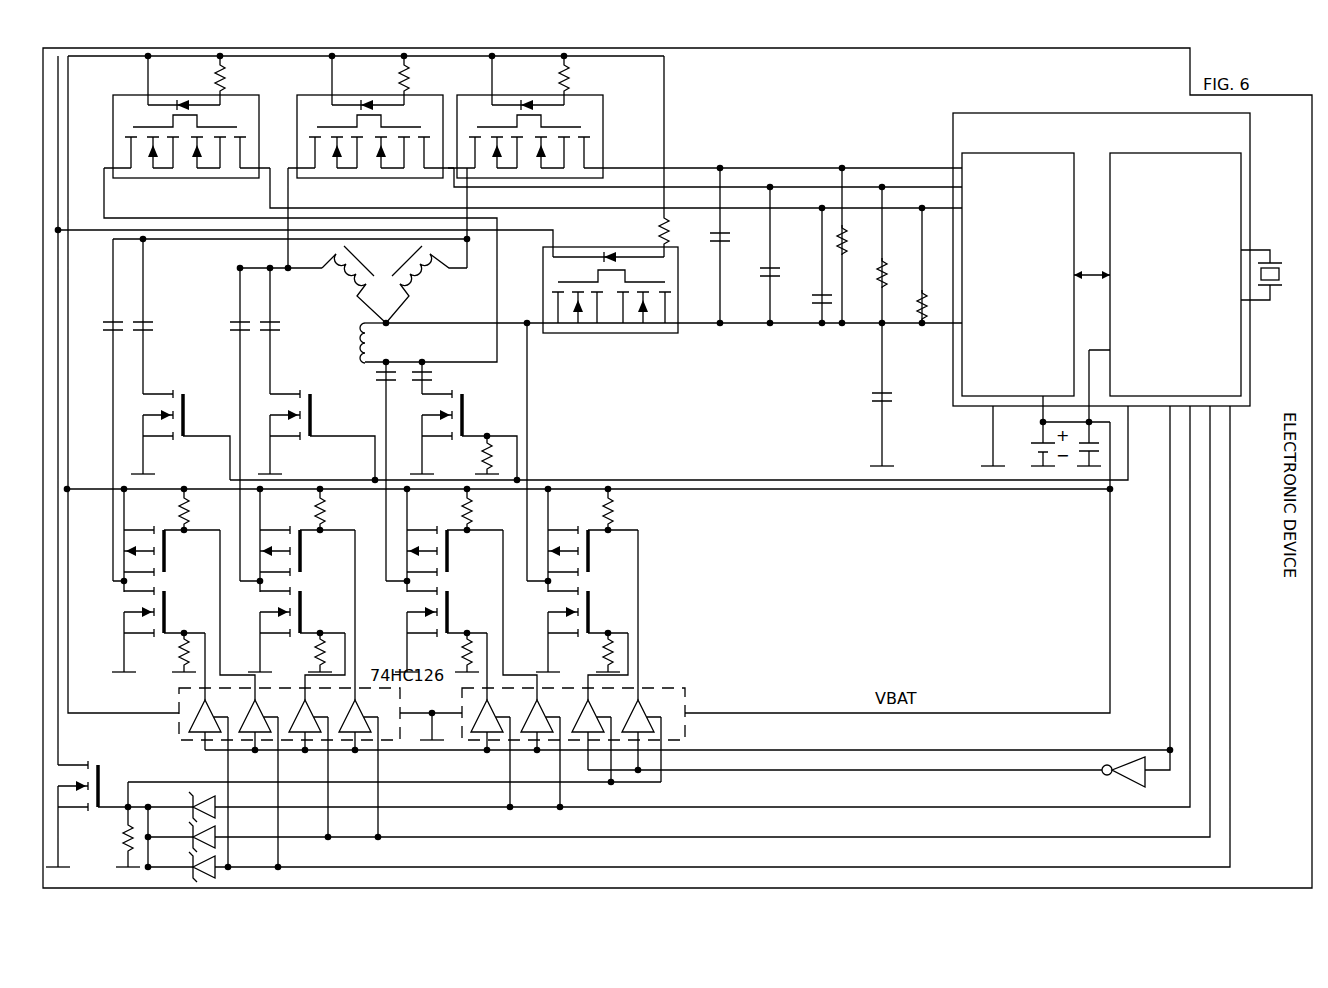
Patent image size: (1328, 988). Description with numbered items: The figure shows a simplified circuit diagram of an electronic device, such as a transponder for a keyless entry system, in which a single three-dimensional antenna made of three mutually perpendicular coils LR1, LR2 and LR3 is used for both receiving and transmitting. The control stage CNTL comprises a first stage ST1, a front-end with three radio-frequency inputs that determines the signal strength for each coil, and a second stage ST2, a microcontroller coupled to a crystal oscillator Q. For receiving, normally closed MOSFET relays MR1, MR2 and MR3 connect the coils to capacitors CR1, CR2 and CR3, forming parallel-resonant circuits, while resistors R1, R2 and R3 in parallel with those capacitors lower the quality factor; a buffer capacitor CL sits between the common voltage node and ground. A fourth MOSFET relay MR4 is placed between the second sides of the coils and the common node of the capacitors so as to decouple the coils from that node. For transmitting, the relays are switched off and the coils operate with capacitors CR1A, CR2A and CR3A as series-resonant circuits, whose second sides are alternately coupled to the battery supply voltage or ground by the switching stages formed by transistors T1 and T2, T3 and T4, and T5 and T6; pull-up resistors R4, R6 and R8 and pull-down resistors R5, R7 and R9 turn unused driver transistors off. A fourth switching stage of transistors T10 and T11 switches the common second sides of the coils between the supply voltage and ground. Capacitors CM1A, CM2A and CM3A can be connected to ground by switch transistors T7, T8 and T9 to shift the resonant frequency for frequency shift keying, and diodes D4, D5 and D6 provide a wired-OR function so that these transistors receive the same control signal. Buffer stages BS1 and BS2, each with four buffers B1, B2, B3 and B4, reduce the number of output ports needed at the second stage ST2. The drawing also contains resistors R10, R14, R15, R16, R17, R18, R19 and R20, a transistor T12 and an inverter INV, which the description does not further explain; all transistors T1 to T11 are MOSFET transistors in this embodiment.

The resistor R1 is at (933, 265).
The resistor R2 is at (893, 255).
The resistor R3 is at (853, 245).
The pull-up resistor R4 is at (454, 509).
The pull-down resistor R5 is at (457, 652).
The pull-up resistor R6 is at (307, 509).
The pull-down resistor R7 is at (310, 652).
The pull-up resistor R8 is at (170, 509).
The pull-down resistor R9 is at (174, 652).
The resistor R10 is at (472, 455).
The resistor R14 is at (114, 837).
The resistor R15 is at (589, 509).
The resistor R16 is at (593, 652).
The resistor R17 is at (237, 80).
The resistor R18 is at (421, 80).
The resistor R19 is at (581, 80).
The resistor R20 is at (646, 230).
The MOSFET relay MR1 is at (187, 131).
The MOSFET relay MR2 is at (371, 131).
The MOSFET relay MR3 is at (547, 117).
The fourth MOSFET relay MR4 is at (610, 329).
The capacitor CR1 is at (812, 265).
The capacitor CR2 is at (760, 255).
The capacitor CR3 is at (711, 245).
The capacitor CR1A is at (361, 471).
The capacitor CR2A is at (226, 424).
The capacitor CR3A is at (99, 410).
The capacitor CM1A is at (447, 378).
The capacitor CM2A is at (281, 331).
The capacitor CM3A is at (154, 316).
The buffer capacitor CL is at (869, 394).
The coil LR1 is at (357, 343).
The coil LR2 is at (352, 284).
The coil LR3 is at (426, 284).
The transistor T1 is at (455, 540).
The transistor T2 is at (441, 629).
The transistor T3 is at (307, 540).
The transistor T4 is at (296, 629).
The transistor T5 is at (172, 540).
The transistor T6 is at (158, 629).
The transistor T7 is at (463, 435).
The transistor T8 is at (316, 435).
The transistor T9 is at (180, 435).
The transistor T10 is at (593, 540).
The transistor T11 is at (582, 629).
The transistor T12 is at (98, 786).
The control stage CNTL is at (1101, 259).
The first stage ST1 is at (1018, 274).
The second stage ST2 is at (1175, 274).
The crystal oscillator Q is at (1271, 275).
The buffer stage BS1 is at (270, 698).
The buffer stage BS2 is at (594, 668).
The buffer B1 is at (211, 750).
The buffer B2 is at (251, 698).
The buffer B3 is at (317, 735).
The buffer B4 is at (361, 683).
The diode D4 is at (189, 803).
The diode D5 is at (189, 833).
The diode D6 is at (189, 863).
The inverter INV is at (1142, 779).